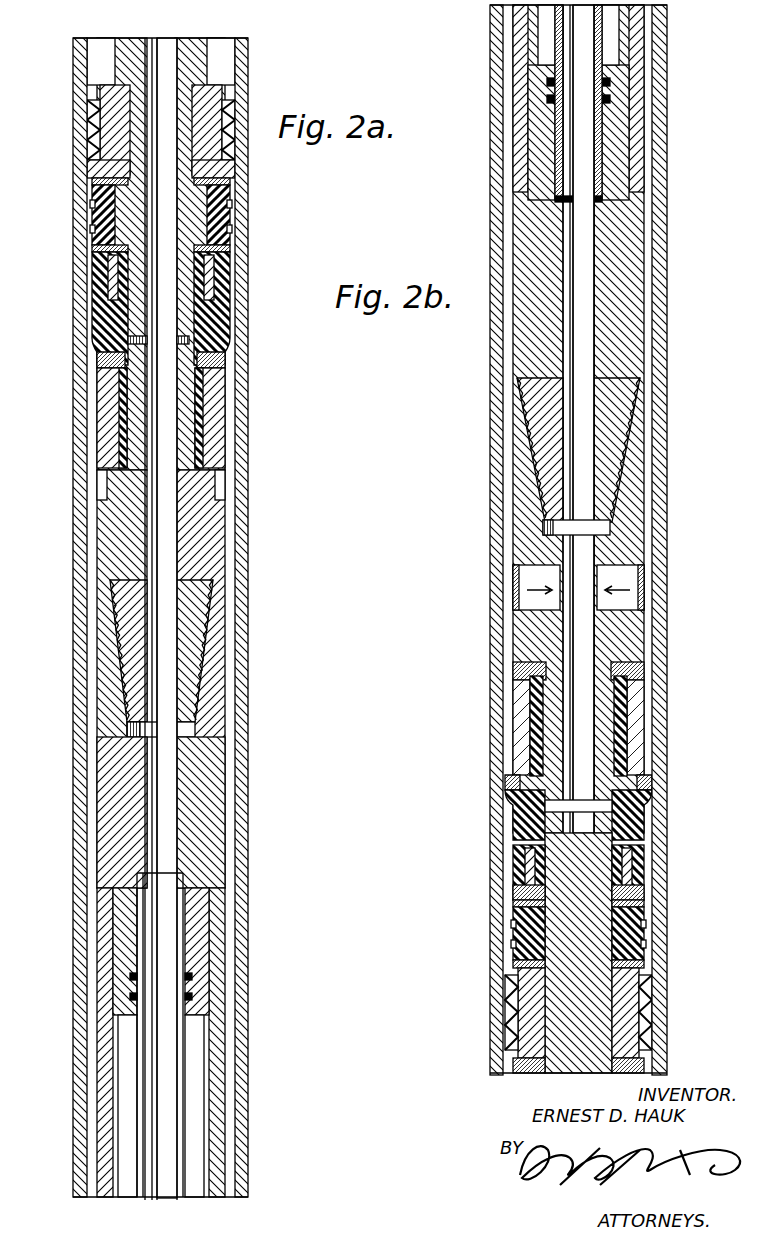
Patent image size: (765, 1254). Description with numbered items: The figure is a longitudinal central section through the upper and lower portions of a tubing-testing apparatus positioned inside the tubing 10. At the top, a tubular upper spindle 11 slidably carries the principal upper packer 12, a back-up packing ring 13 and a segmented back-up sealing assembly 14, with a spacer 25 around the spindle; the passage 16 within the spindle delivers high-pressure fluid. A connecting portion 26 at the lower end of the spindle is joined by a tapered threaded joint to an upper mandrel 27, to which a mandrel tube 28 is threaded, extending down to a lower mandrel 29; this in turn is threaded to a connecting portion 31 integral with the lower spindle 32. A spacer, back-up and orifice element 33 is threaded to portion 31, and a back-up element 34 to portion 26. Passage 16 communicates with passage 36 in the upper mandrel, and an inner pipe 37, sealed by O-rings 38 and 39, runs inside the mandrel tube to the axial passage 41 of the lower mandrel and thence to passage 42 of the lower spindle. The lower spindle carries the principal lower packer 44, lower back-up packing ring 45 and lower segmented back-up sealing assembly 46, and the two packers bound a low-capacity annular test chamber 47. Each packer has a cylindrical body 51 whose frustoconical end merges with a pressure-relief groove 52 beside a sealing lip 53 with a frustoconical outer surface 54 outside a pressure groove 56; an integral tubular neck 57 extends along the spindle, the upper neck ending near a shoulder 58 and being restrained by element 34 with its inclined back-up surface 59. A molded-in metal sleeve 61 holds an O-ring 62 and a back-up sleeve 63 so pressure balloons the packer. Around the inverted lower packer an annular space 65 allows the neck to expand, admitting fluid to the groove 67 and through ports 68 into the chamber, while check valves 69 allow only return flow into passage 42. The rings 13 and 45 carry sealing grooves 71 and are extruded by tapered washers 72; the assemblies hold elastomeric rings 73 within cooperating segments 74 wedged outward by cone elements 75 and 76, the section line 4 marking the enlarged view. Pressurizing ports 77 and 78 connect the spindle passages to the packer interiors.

In FIG. 2B, the section line 4— 4 is at (474, 1013).
In FIG. 2A, the tubing 10 is at (250, 547).
In FIG. 2B, the tubing 10 is at (668, 522).
In FIG. 2A, the upper spindle 11 is at (196, 38).
In FIG. 2A, the principal upper packer 12 is at (228, 325).
In FIG. 2A, the back-up packing ring 13 is at (95, 212).
In FIG. 2A, the segmented back-up sealing assembly 14 is at (92, 95).
In FIG. 2A, the passage 16 is at (164, 40).
In FIG. 2A, the spacer 25 is at (118, 40).
In FIG. 2A, the connecting portion 26 is at (105, 531).
In FIG. 2A, the upper mandrel 27 is at (105, 788).
In FIG. 2A, the mandrel tube 28 is at (100, 1078).
In FIG. 2B, the mandrel tube 28 is at (520, 53).
In FIG. 2B, the lower mandrel 29 is at (518, 247).
In FIG. 2B, the connecting portion 31 is at (520, 469).
In FIG. 2B, the lower spindle 32 is at (580, 1074).
In FIG. 2B, the spacer, back-up and orifice element 33 is at (637, 740).
In FIG. 2A, the back-up element 34 is at (100, 415).
In FIG. 2A, the passage 36 is at (168, 830).
In FIG. 2A, the inner pipe 37 is at (140, 1200).
In FIG. 2B, the inner pipe 37 is at (559, 30).
In FIG. 2A, the O-rings 38 is at (192, 996).
In FIG. 2B, the O-rings 39 is at (608, 98).
In FIG. 2B, the axial passage 41 is at (584, 351).
In FIG. 2B, the passage 42 is at (586, 641).
In FIG. 2B, the principal lower packer 44 is at (643, 834).
In FIG. 2B, the lower back-up packing ring 45 is at (650, 926).
In FIG. 2B, the lower segmented back-up sealing assembly 46 is at (648, 1031).
In FIG. 2A, the annular test chamber 47 is at (228, 665).
In FIG. 2B, the annular test chamber 47 is at (655, 616).
In FIG. 2A, the cylindrical body 51 is at (222, 298).
In FIG. 2B, the cylindrical body 51 is at (626, 863).
In FIG. 2A, the annular pressure-relief groove 52 is at (95, 340).
In FIG. 2B, the annular pressure-relief groove 52 is at (513, 806).
In FIG. 2A, the sealing lip 53 is at (214, 362).
In FIG. 2B, the sealing lip 53 is at (512, 783).
In FIG. 2A, the frustoconical outer surface 54 is at (100, 362).
In FIG. 2B, the frustoconical outer surface 54 is at (641, 794).
In FIG. 2A, the annular pressure groove 56 is at (216, 378).
In FIG. 2B, the annular pressure groove 56 is at (640, 772).
In FIG. 2A, the tubular neck 57 is at (120, 441).
In FIG. 2B, the tubular neck 57 is at (621, 716).
In FIG. 2A, the shoulder 58 is at (112, 466).
In FIG. 2A, the back-up surface 59 is at (218, 401).
In FIG. 2A, the metal sleeve 61 is at (100, 285).
In FIG. 2B, the metal sleeve 61 is at (525, 853).
In FIG. 2A, the O-ring 62 is at (208, 276).
In FIG. 2B, the O-ring 62 is at (528, 871).
In FIG. 2A, the back-up sleeve 63 is at (110, 270).
In FIG. 2B, the back-up sleeve 63 is at (528, 893).
In FIG. 2B, the annular space 65 is at (536, 704).
In FIG. 2B, the annular groove 67 is at (530, 666).
In FIG. 2B, the ports 68 is at (520, 674).
In FIG. 2B, the check valves 69 is at (525, 575).
In FIG. 2A, the annular sealing grooves 71 is at (226, 225).
In FIG. 2B, the annular sealing grooves 71 is at (516, 946).
In FIG. 2A, the tapered washers 72 is at (95, 248).
In FIG. 2B, the tapered washers 72 is at (633, 905).
In FIG. 2A, the elastomeric rings 73 is at (92, 142).
In FIG. 2B, the elastomeric rings 73 is at (512, 1012).
In FIG. 2A, the cooperating segments 74 is at (90, 169).
In FIG. 2B, the cooperating segments 74 is at (522, 1048).
In FIG. 2A, the cone element 75 is at (95, 182).
In FIG. 2B, the cone element 75 is at (642, 962).
In FIG. 2B, the cone element 76 is at (641, 1066).
In FIG. 2A, the pressurizing ports 77 is at (140, 340).
In FIG. 2B, the ports 78 is at (606, 809).